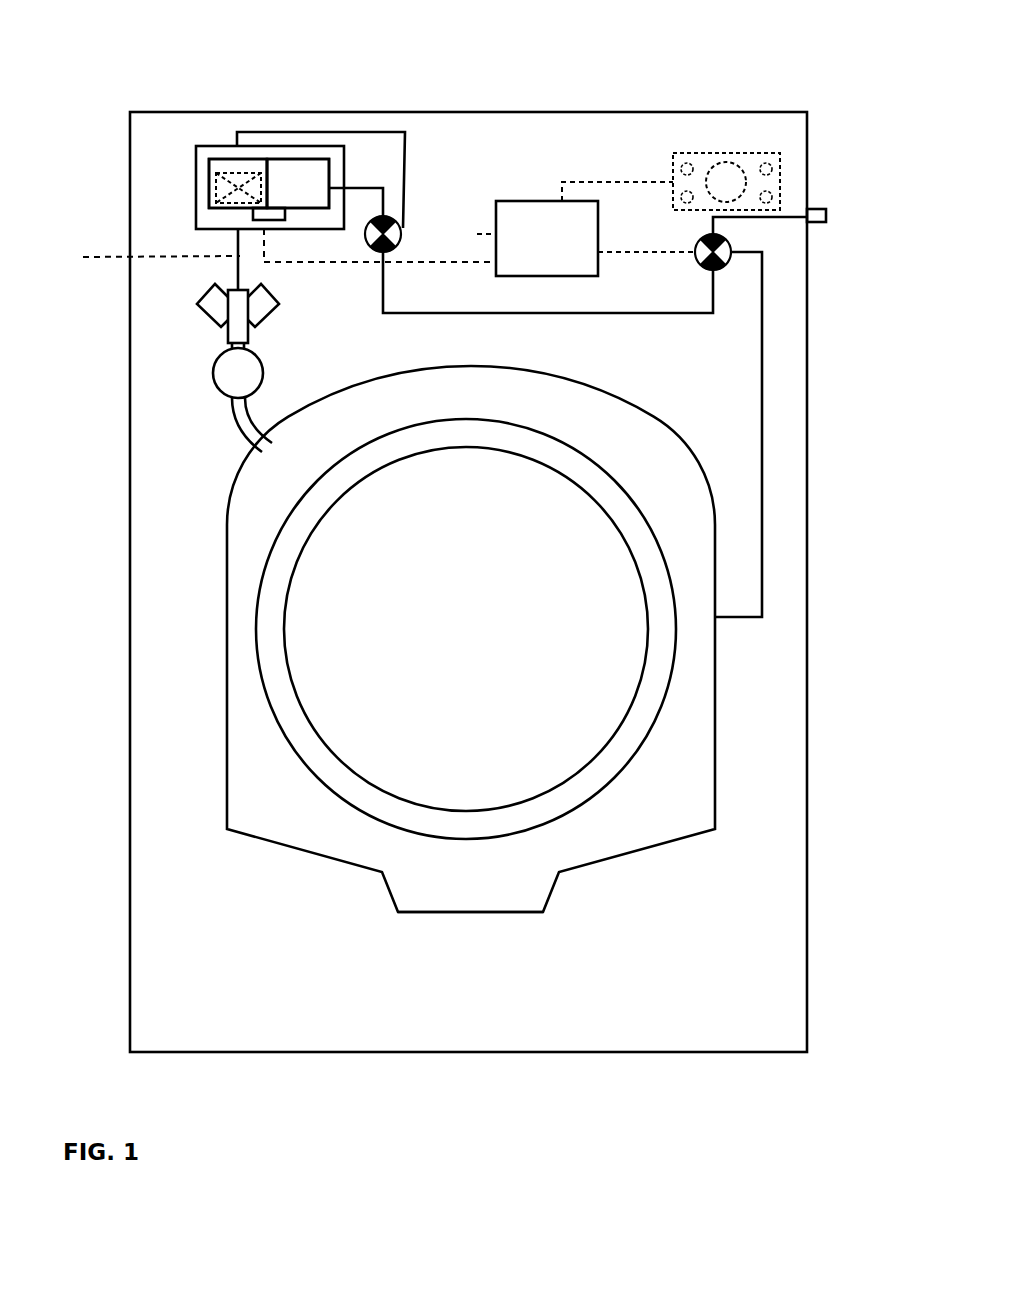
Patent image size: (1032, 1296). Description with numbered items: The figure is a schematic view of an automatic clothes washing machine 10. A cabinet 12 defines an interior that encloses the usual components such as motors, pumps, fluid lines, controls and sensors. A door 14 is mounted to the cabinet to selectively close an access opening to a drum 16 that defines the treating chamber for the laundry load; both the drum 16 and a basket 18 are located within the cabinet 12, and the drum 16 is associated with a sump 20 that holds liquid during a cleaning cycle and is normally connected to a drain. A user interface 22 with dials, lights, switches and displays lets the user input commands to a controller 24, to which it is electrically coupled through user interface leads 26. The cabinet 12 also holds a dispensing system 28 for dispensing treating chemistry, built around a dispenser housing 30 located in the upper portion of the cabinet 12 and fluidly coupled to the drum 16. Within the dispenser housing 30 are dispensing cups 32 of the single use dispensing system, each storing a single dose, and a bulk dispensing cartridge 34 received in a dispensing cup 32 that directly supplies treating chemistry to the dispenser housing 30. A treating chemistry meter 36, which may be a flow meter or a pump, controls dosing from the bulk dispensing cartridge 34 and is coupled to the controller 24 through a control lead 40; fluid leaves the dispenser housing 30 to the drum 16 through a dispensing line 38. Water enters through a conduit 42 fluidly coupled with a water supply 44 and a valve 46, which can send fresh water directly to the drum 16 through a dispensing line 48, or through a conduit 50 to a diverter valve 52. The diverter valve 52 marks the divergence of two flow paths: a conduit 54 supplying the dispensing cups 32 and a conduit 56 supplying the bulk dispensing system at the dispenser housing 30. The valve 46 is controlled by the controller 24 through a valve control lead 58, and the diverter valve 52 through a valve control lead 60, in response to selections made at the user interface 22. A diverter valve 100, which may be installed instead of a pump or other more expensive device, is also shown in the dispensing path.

The automatic clothes washing machine 10 is at (883, 104).
The cabinet 12 is at (807, 643).
The door 14 is at (640, 687).
The drum 16 is at (716, 547).
The basket 18 is at (640, 510).
The sump 20 is at (503, 913).
The user interface 22 is at (720, 153).
The controller 24 is at (543, 201).
The user interface leads 26 is at (628, 182).
The dispensing system 28 is at (191, 151).
The dispenser housing 30 is at (335, 147).
The dispensing cup 32 is at (228, 168).
The bulk dispensing cartridge 34 is at (245, 175).
The treating chemistry meter 36 is at (196, 218).
The dispensing line 38 is at (237, 270).
The control lead 40 is at (271, 249).
The conduit 42 is at (788, 213).
The water supply 44 is at (817, 208).
The valve 46 is at (733, 247).
The dispensing line 48 is at (763, 270).
The conduit 50 is at (715, 302).
The diverter valve 52 is at (401, 230).
The conduit 54 is at (386, 208).
The conduit 56 is at (322, 132).
The valve control lead 58 is at (620, 252).
The valve control lead 60 is at (477, 234).
The diverter valve 100 is at (209, 377).